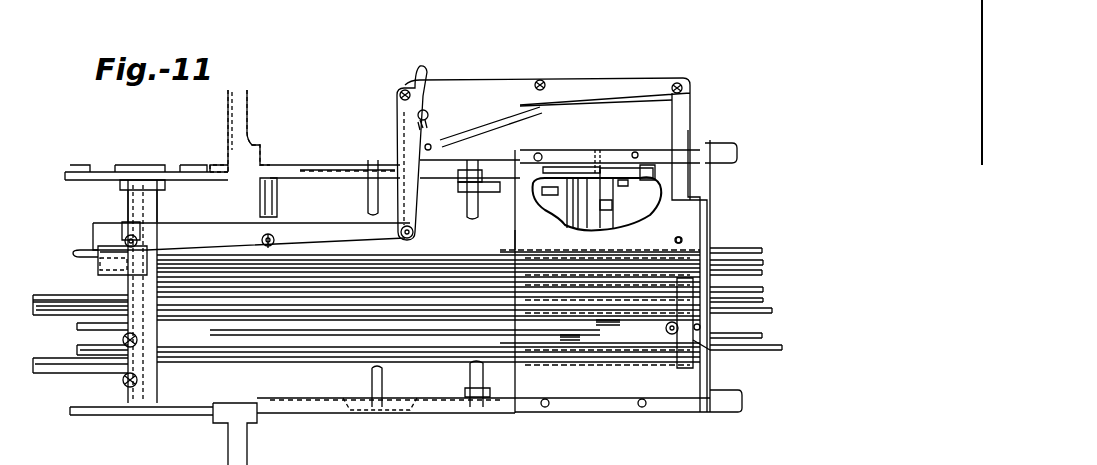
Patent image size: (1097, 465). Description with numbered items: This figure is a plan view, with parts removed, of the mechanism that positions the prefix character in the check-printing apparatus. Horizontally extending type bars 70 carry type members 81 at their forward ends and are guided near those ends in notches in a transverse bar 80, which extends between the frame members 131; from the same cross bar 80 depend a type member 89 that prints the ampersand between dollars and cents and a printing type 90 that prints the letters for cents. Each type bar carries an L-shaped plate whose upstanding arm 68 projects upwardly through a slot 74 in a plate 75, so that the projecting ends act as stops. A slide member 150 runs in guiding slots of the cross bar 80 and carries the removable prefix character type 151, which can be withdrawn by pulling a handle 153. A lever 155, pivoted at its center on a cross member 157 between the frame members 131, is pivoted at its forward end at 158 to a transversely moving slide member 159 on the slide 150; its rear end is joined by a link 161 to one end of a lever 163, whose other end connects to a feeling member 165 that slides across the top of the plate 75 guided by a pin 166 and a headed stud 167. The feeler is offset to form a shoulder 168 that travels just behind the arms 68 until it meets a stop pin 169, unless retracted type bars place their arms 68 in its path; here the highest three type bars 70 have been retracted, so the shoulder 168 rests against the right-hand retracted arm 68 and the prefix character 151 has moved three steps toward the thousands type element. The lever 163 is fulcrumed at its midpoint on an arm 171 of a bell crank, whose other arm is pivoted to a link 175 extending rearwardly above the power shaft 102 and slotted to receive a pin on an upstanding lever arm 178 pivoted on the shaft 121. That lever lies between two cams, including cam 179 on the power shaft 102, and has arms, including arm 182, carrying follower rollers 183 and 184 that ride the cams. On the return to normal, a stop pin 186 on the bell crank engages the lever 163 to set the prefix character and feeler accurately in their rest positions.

The upstanding arm 68 is at (675, 255).
The type bar 70 is at (220, 365).
The slot 74 is at (612, 275).
The plate 75 is at (513, 233).
The transverse bar 80 is at (148, 205).
The type member 81 is at (170, 368).
The type member 89 is at (120, 340).
The printing type 90 is at (120, 378).
The power shaft 102 is at (580, 219).
The shaft 121 is at (605, 208).
The frame member 131 is at (320, 160).
The slide member 150 is at (128, 281).
The prefix character type 151 is at (118, 238).
The handle 153 is at (80, 250).
The lever 155 is at (313, 233).
The cross member 157 is at (267, 186).
The pivot 158 is at (138, 240).
The slide member 159 is at (122, 227).
The link 161 is at (398, 128).
The lever 163 is at (590, 80).
The feeling member 165 is at (700, 195).
The pin 166 is at (700, 348).
The headed stud 167 is at (670, 335).
The shoulder 168 is at (677, 278).
The stop pin 169 is at (684, 240).
The arm 171 is at (478, 114).
The link 175 is at (495, 193).
The lever arm 178 is at (598, 163).
The cam 179 is at (573, 163).
The arm 182 is at (625, 184).
The follower roller 183 is at (560, 200).
The follower roller 184 is at (647, 165).
The stop pin 186 is at (433, 141).